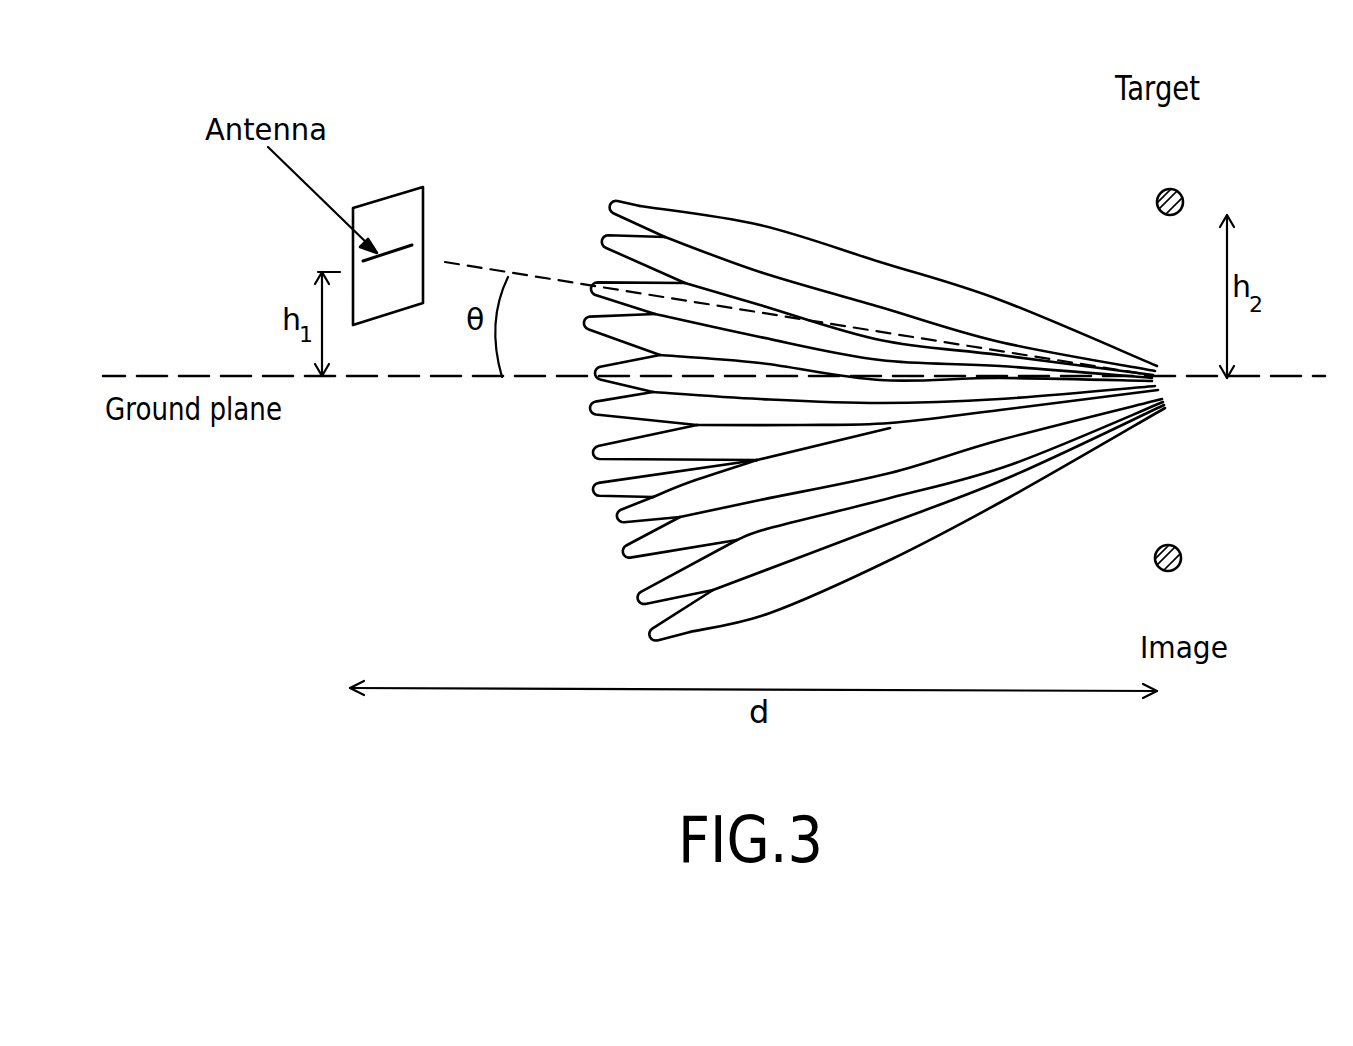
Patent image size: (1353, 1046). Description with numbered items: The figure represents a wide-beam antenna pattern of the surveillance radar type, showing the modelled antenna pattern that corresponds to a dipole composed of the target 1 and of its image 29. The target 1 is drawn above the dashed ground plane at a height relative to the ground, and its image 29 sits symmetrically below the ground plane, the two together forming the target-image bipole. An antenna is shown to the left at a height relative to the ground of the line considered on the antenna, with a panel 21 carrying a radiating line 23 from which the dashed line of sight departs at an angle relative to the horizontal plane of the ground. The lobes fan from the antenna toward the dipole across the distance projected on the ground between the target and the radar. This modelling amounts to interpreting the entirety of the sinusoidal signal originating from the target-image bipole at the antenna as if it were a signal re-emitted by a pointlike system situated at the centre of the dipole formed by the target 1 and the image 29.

The antenna 21 is at (387, 197).
The radiating element of antenna 23 is at (403, 245).
The target 1 is at (1172, 188).
The image 29 is at (1171, 572).